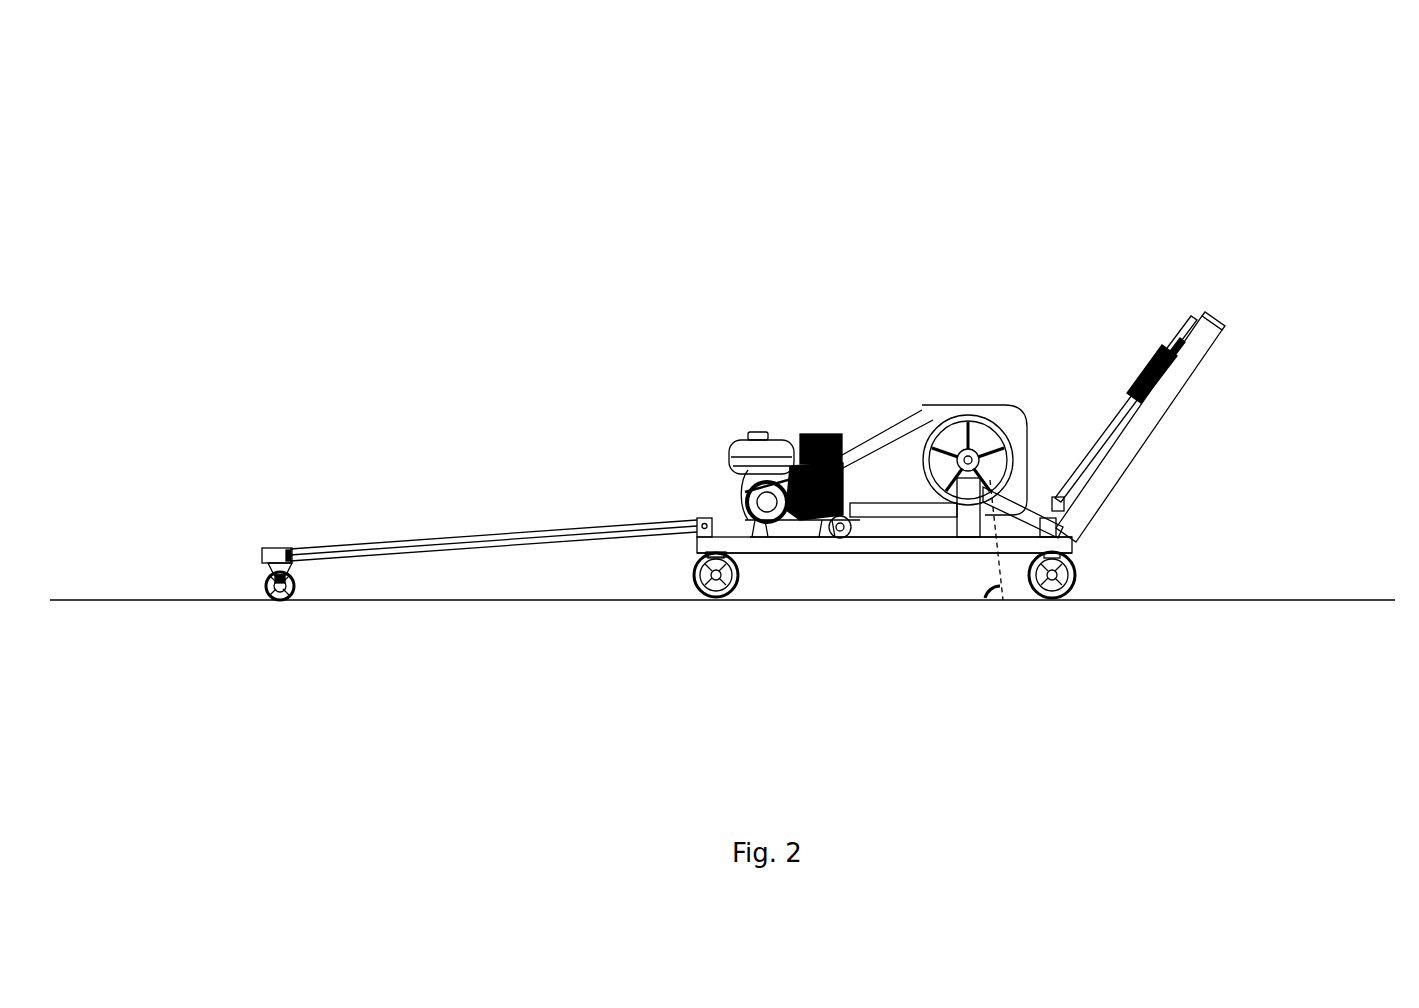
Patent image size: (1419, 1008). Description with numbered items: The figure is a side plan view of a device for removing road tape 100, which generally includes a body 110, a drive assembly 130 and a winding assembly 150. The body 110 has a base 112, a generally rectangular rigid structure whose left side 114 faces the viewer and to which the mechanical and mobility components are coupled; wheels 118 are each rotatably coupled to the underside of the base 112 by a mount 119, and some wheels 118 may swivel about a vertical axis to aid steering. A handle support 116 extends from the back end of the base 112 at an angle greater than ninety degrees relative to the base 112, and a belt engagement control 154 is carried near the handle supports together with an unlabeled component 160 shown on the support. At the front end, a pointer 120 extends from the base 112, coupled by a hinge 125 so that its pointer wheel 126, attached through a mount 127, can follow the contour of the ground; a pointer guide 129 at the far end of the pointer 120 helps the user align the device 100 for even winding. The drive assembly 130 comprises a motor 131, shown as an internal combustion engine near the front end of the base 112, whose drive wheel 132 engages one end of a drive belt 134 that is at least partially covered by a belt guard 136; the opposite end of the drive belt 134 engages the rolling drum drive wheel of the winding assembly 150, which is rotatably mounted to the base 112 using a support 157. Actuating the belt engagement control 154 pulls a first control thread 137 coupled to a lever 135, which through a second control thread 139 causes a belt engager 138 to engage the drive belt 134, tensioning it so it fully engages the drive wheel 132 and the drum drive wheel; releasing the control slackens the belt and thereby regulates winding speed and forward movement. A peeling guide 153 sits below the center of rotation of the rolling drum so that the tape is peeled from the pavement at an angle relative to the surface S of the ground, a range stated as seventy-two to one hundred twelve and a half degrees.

The device for removing road tape 100 is at (293, 140).
The body 110 is at (1080, 549).
The base 112 is at (918, 558).
The left side 114 is at (770, 554).
The left handle support 116 is at (1098, 483).
The wheel 118 is at (722, 597).
The mount 119 is at (694, 565).
The pointer 120 is at (440, 515).
The hinge 125 is at (690, 519).
The pointer wheel 126 is at (292, 600).
The mount 127 is at (262, 576).
The pointer guide 129 is at (278, 548).
The drive assembly 130 is at (803, 413).
The motor 131 is at (738, 436).
The drive wheel 132 is at (750, 492).
The drive belt 134 is at (992, 422).
The lever 135 is at (1073, 510).
The belt guard 136 is at (892, 403).
The first control thread 137 is at (1101, 456).
The belt engager 138 is at (843, 540).
The second control thread 139 is at (1055, 597).
The winding assembly 150 is at (983, 395).
The peeling guide 153 is at (1002, 540).
The belt engagement control 154 is at (1177, 348).
The support 157 is at (966, 520).
The clamp 160 is at (1141, 377).
The surface S is at (1243, 600).